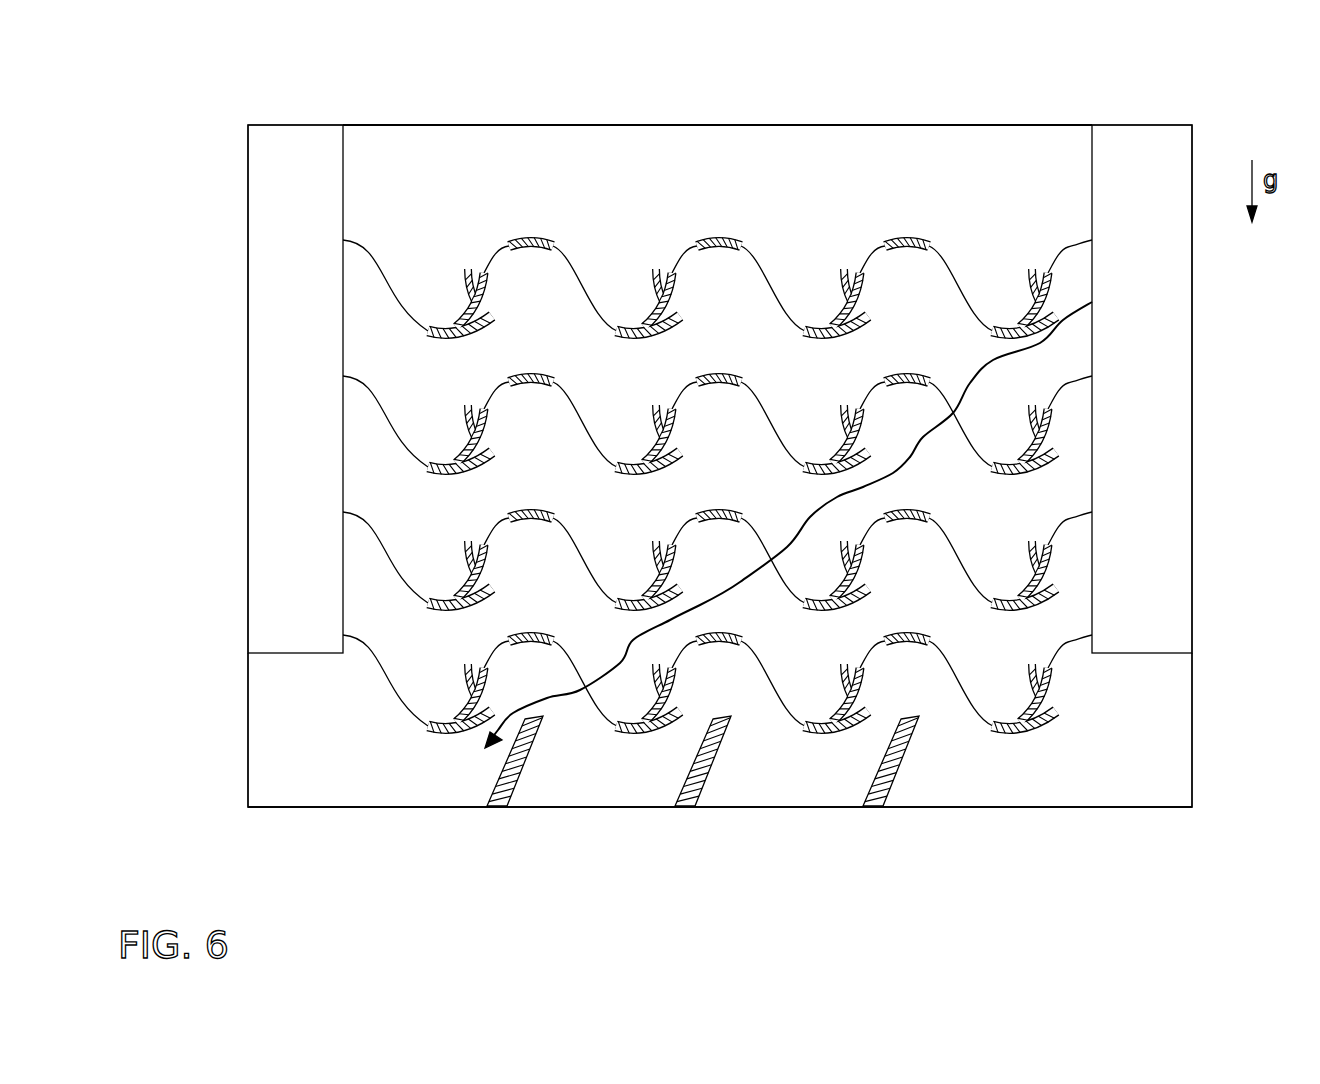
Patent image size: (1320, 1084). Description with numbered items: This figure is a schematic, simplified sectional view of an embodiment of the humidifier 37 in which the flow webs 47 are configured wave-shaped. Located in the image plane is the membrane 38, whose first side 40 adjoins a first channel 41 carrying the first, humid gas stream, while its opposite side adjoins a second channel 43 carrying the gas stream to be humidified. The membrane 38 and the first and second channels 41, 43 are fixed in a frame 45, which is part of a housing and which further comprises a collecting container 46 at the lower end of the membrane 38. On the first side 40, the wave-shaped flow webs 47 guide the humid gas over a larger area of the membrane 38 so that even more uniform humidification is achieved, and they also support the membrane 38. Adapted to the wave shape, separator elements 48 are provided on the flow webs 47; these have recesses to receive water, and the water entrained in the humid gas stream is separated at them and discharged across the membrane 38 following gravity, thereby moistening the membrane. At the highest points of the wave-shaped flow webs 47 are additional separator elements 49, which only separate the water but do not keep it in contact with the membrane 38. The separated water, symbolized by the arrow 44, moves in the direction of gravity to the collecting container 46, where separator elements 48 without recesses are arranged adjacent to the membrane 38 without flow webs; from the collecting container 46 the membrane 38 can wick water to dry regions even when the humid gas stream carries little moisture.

The humidifier 37 is at (1212, 98).
The membrane 38 is at (1000, 130).
The first side 40 is at (796, 125).
The first channel 41 is at (1173, 363).
The second channel 43 is at (265, 315).
The arrow 44 is at (618, 662).
The frame 45 is at (1098, 822).
The collecting container 46 is at (1173, 744).
The flow webs 47 is at (1068, 247).
The separator elements 48 is at (865, 320).
The additional separator elements 49 is at (531, 240).